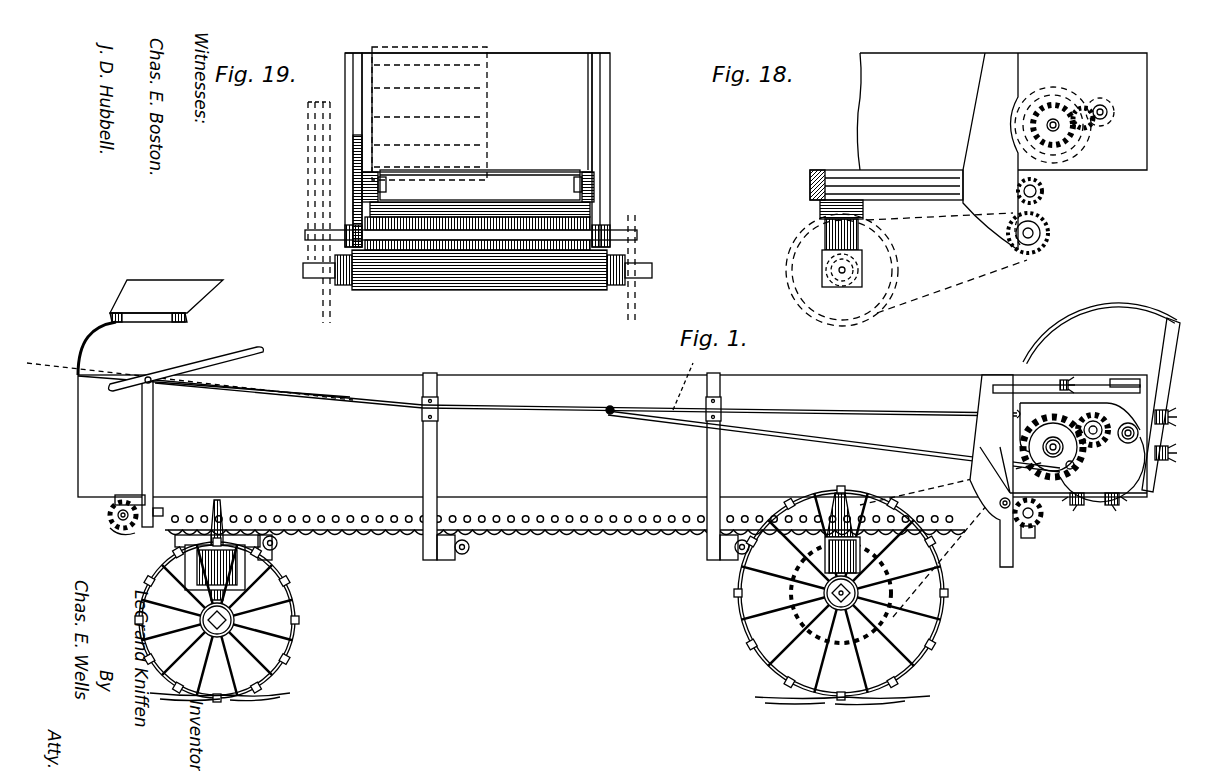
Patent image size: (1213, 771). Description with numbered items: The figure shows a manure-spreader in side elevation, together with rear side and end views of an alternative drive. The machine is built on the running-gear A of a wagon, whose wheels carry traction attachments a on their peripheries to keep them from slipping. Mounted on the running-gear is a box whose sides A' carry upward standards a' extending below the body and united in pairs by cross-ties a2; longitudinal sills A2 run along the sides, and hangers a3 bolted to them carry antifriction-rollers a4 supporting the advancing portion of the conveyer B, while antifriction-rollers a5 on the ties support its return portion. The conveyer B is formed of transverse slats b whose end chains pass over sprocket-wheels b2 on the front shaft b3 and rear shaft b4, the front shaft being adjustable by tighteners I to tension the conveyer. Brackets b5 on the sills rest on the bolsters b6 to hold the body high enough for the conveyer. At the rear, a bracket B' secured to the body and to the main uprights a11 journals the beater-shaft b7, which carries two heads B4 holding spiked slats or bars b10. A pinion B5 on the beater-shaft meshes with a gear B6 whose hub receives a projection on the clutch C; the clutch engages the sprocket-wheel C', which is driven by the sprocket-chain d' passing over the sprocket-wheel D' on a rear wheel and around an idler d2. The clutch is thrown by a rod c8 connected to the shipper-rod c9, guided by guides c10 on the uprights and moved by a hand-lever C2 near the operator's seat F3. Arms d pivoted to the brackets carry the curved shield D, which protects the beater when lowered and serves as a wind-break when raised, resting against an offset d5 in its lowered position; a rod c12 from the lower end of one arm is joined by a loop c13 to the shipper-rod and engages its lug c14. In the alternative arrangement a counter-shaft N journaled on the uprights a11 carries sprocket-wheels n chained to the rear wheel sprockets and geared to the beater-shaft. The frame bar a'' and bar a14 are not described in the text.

In FIG. 1, the running-gear A is at (221, 619).
In FIG. 1, the traction or friction attachments a is at (515, 654).
In FIG. 19, the sides of the box or body A' is at (477, 112).
In FIG. 18, the sides of the box or body A' is at (1002, 111).
In FIG. 1, the sides of the box or body A' is at (612, 436).
In FIG. 1, the upward standards a' is at (438, 466).
In FIG. 19, the side frame bar a'' is at (613, 150).
In FIG. 19, the sills A2 is at (362, 185).
In FIG. 18, the sills A2 is at (810, 180).
In FIG. 1, the sills A2 is at (565, 517).
In FIG. 1, the cross-ties a2 is at (498, 558).
In FIG. 19, the hangers a3 is at (480, 185).
In FIG. 1, the hangers a3 is at (1130, 379).
In FIG. 19, the antifriction-rollers a4 is at (384, 176).
In FIG. 1, the antifriction-rollers a5 is at (278, 543).
In FIG. 19, the main uprights a11 is at (345, 127).
In FIG. 18, the main uprights a11 is at (990, 151).
In FIG. 1, the main uprights a11 is at (989, 471).
In FIG. 1, the bar a14 is at (1095, 385).
In FIG. 19, the conveyer B is at (435, 113).
In FIG. 1, the conveyer B is at (588, 556).
In FIG. 19, the bracket B' is at (477, 265).
In FIG. 1, the wheels or heads B4 is at (1168, 435).
In FIG. 19, the pinion B5 is at (370, 207).
In FIG. 18, the pinion B5 is at (820, 208).
In FIG. 18, the gear B6 is at (1085, 108).
In FIG. 1, the gear B6 is at (1040, 422).
In FIG. 1, the transverse slats b is at (108, 514).
In FIG. 18, the sprocket-wheels b2 is at (1038, 220).
In FIG. 1, the sprocket-wheels b2 is at (112, 482).
In FIG. 1, the shaft b3 is at (110, 528).
In FIG. 18, the shaft b4 is at (1042, 190).
In FIG. 1, the shaft b4 is at (1030, 538).
In FIG. 1, the brackets b5 is at (180, 540).
In FIG. 18, the bolsters b6 is at (842, 270).
In FIG. 1, the bolsters b6 is at (800, 555).
In FIG. 18, the beater-shaft b7 is at (1103, 105).
In FIG. 1, the beater-shaft b7 is at (1135, 425).
In FIG. 1, the slats or bars b10 is at (1078, 508).
In FIG. 1, the clutch C is at (1053, 431).
In FIG. 18, the sprocket-wheel C' is at (1053, 117).
In FIG. 1, the sprocket-wheel C' is at (1090, 474).
In FIG. 1, the hand-lever C2 is at (50, 368).
In FIG. 1, the rod c8 is at (1017, 414).
In FIG. 1, the shipper-rod c9 is at (797, 406).
In FIG. 1, the guides c10 is at (438, 400).
In FIG. 1, the rod c12 is at (870, 448).
In FIG. 1, the ring or loop c13 is at (605, 416).
In FIG. 1, the lug or projection c14 is at (614, 408).
In FIG. 19, the curved shield D is at (643, 269).
In FIG. 1, the curved shield D is at (1100, 325).
In FIG. 19, the sprocket-wheel D' is at (330, 212).
In FIG. 1, the sprocket-wheel D' is at (841, 593).
In FIG. 1, the arms d is at (1171, 405).
In FIG. 1, the sprocket-chain d' is at (952, 539).
In FIG. 1, the idler d2 is at (1005, 508).
In FIG. 1, the offset d5 is at (1064, 380).
In FIG. 1, the seat F3 is at (166, 301).
In FIG. 1, the tighteners I is at (160, 506).
In FIG. 19, the sprocket-wheels n is at (318, 218).
In FIG. 18, the sprocket-wheels n is at (1045, 222).
In FIG. 19, the counter-shaft N is at (305, 235).
In FIG. 18, the counter-shaft N is at (1048, 233).